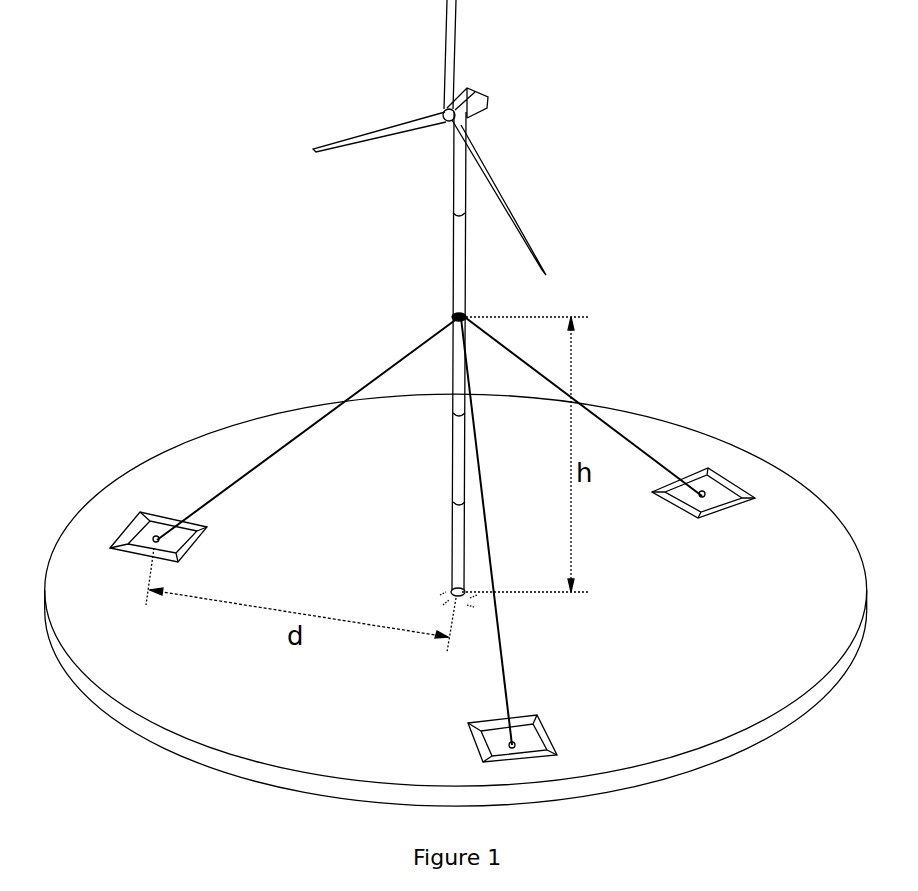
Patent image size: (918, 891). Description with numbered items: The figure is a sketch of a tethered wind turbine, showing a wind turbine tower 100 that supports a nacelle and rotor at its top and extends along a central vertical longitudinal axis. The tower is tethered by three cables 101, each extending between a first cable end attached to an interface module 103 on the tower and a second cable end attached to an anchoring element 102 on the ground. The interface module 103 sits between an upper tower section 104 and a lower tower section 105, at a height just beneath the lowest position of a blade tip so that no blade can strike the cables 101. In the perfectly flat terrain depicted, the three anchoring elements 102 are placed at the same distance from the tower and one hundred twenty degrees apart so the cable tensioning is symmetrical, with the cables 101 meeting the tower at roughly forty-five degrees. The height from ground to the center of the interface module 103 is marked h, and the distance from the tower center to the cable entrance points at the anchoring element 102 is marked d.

The wind turbine tower 100 is at (657, 188).
The cable 101 is at (623, 433).
The anchoring element 102 is at (720, 485).
The interface module 103 is at (456, 316).
The upper tower section 104 is at (455, 247).
The lower tower section 105 is at (452, 372).